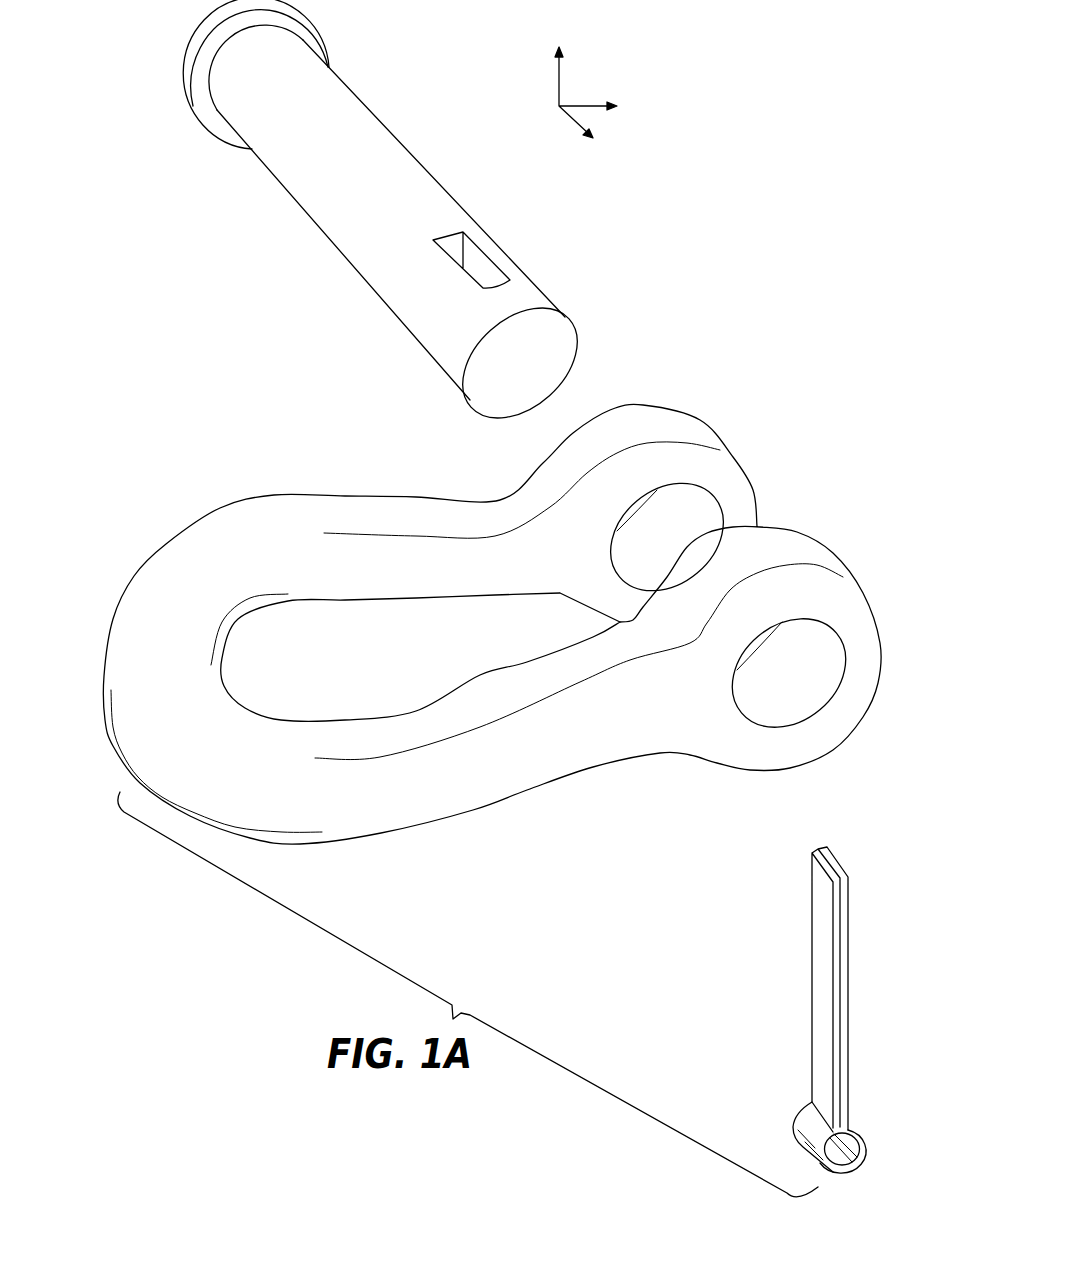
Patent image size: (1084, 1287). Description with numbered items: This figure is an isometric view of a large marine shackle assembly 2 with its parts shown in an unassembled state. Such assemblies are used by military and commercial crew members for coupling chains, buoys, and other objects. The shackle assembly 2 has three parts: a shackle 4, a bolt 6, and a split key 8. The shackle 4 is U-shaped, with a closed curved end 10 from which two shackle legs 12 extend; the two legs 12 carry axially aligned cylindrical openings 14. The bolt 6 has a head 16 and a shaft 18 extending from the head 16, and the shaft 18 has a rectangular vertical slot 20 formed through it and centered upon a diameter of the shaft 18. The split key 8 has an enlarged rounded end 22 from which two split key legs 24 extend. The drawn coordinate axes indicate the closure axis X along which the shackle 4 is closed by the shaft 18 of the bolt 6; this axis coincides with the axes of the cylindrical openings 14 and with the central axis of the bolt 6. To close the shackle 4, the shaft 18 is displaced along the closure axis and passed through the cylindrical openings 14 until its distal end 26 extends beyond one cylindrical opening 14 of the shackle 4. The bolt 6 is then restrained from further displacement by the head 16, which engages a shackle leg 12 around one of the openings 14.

The shackle assembly 2 is at (704, 196).
The shackle 4 is at (499, 795).
The bolt 6 is at (368, 220).
The split key 8 is at (832, 1010).
The closed curved end 10 is at (157, 658).
The shackle legs 12 is at (742, 576).
The cylindrical openings 14 is at (707, 523).
The head 16 is at (186, 78).
The shaft 18 is at (348, 233).
The rectangular vertical slot 20 is at (473, 260).
The enlarged rounded end 22 is at (803, 1123).
The split key legs 24 is at (852, 937).
The distal end 26 is at (423, 318).